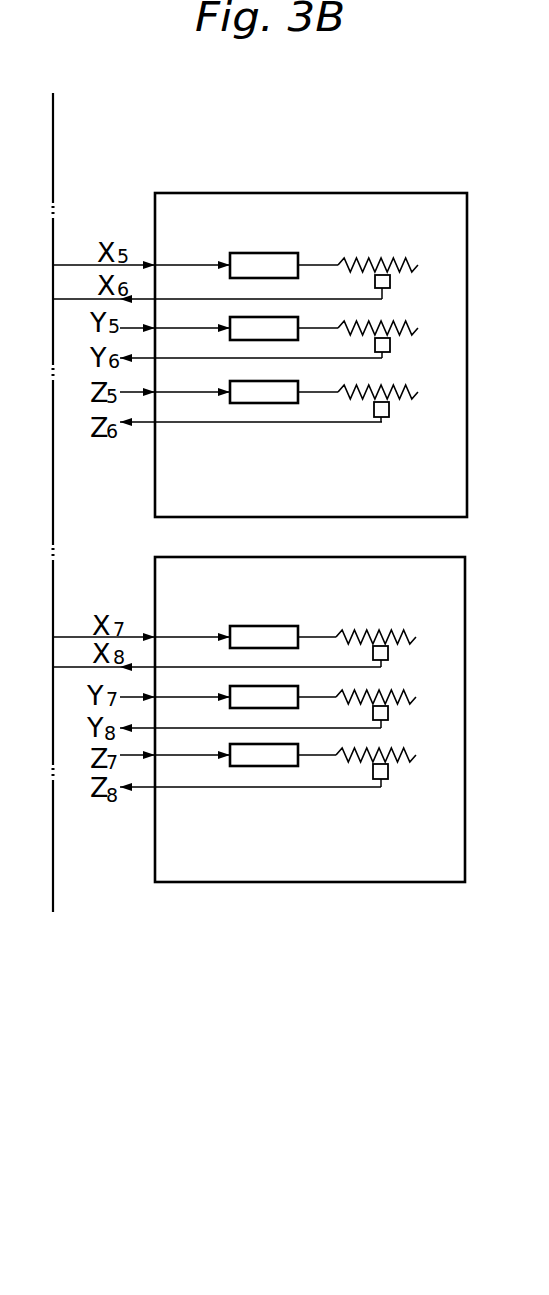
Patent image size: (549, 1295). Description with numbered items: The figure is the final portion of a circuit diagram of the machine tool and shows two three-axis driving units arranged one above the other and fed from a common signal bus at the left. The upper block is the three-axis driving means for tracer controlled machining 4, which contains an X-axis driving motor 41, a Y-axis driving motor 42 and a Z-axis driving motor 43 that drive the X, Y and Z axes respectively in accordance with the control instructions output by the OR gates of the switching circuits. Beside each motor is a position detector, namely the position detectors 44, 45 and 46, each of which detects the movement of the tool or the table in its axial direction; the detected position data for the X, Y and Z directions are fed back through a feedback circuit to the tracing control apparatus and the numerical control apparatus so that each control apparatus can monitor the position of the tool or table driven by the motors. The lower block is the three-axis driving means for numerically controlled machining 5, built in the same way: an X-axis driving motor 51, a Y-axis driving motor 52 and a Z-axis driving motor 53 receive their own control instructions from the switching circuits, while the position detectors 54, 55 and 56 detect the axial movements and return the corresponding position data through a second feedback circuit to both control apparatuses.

The three-axis driving means for tracer controlled machining 4 is at (275, 193).
The three-axis driving means for numerically controlled machining 5 is at (272, 557).
The X-axis driving motor 41 is at (268, 261).
The Y-axis driving motor 42 is at (245, 333).
The Z-axis driving motor 43 is at (245, 394).
The position detector 44 is at (390, 283).
The position detector 45 is at (390, 346).
The position detector 46 is at (389, 410).
The X-axis driving motor 51 is at (268, 632).
The Y-axis driving motor 52 is at (245, 699).
The Z-axis driving motor 53 is at (245, 757).
The position detector 54 is at (388, 654).
The position detector 55 is at (388, 714).
The position detector 56 is at (388, 772).